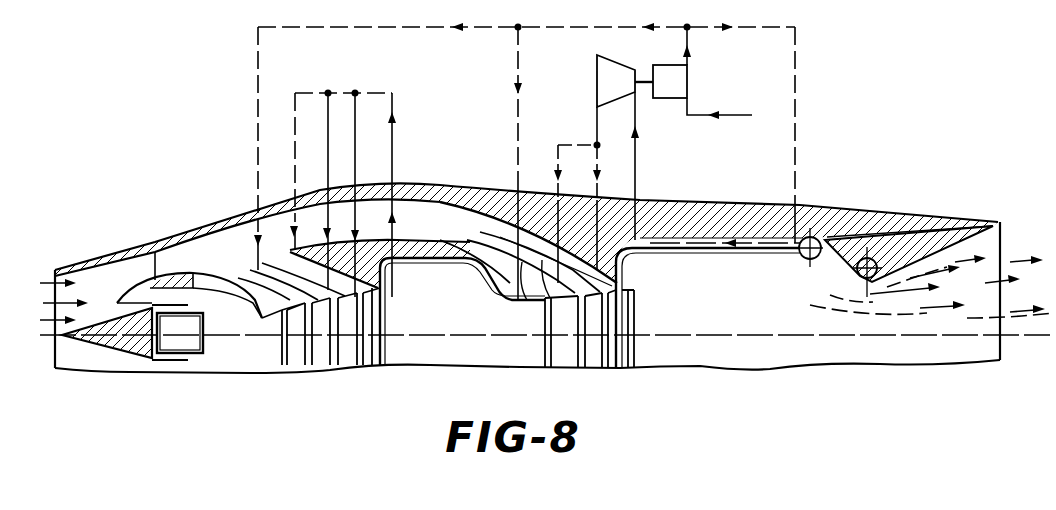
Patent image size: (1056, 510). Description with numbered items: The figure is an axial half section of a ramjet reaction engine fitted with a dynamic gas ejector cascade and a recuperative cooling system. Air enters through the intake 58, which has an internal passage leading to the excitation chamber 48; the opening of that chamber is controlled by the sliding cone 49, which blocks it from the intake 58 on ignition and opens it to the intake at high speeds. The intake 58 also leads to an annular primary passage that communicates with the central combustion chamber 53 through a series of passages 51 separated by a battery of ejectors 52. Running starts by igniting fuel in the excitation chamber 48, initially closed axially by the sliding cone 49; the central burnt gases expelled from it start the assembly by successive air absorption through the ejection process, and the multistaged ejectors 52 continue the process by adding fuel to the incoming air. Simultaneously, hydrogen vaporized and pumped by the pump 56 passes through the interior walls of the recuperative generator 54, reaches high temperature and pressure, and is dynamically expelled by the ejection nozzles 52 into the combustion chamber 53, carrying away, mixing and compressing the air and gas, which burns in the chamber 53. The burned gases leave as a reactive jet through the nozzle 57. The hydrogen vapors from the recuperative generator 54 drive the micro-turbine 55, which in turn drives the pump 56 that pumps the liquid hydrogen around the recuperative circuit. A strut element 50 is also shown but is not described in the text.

The excitation chamber 48 is at (217, 343).
The sliding cone 49 is at (117, 343).
The cowl strut 50 is at (213, 282).
The passages 51 is at (290, 300).
The ejectors 52 is at (284, 366).
The combustion chamber 53 is at (441, 322).
The recuperative generator 54 is at (803, 250).
The micro-turbine 55 is at (597, 78).
The pump 56 is at (690, 82).
The nozzle 57 is at (853, 253).
The intake 58 is at (95, 286).